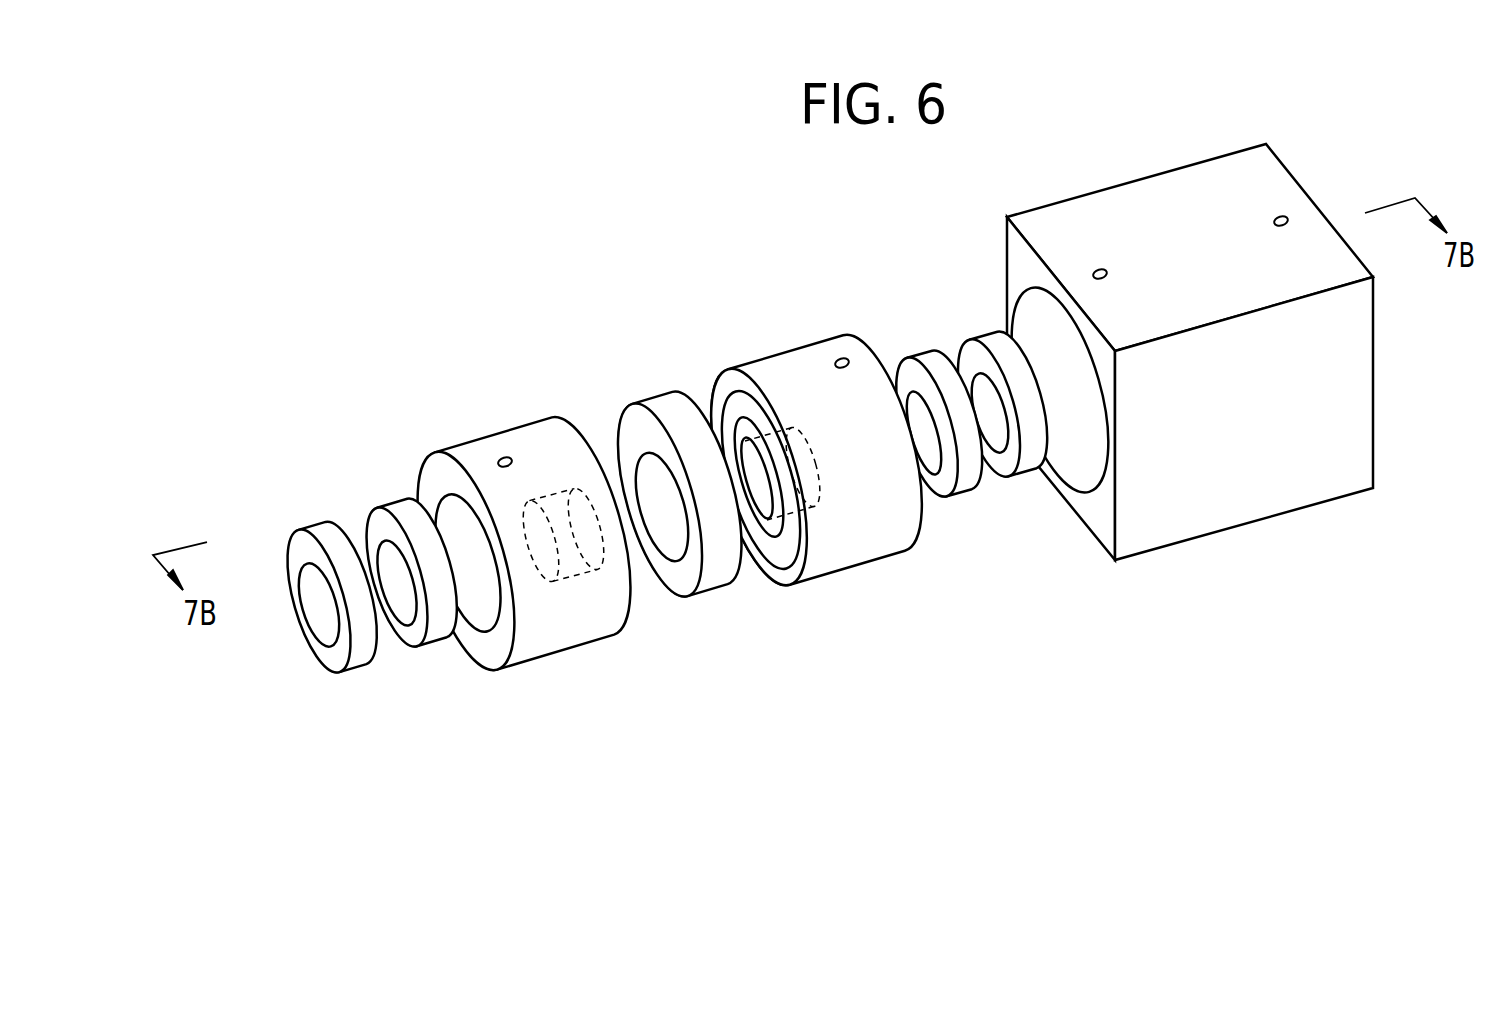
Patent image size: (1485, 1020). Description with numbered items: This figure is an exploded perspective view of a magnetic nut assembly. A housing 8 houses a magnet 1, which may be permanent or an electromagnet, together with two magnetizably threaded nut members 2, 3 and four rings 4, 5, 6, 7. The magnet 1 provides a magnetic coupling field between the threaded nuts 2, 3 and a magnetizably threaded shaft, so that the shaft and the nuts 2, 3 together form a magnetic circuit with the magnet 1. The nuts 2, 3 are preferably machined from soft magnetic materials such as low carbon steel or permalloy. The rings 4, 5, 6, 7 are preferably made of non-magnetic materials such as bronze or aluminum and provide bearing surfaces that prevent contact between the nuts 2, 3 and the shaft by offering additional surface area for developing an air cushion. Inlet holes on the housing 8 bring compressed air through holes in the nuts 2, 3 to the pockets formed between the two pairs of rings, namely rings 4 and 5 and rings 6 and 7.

The magnet 1 is at (713, 583).
The magnetizably threaded nut member 2 is at (620, 633).
The magnetizably threaded nut member 3 is at (920, 538).
The ring 4 is at (372, 667).
The ring 5 is at (450, 642).
The ring 6 is at (984, 480).
The ring 7 is at (1022, 462).
The housing 8 is at (1180, 547).